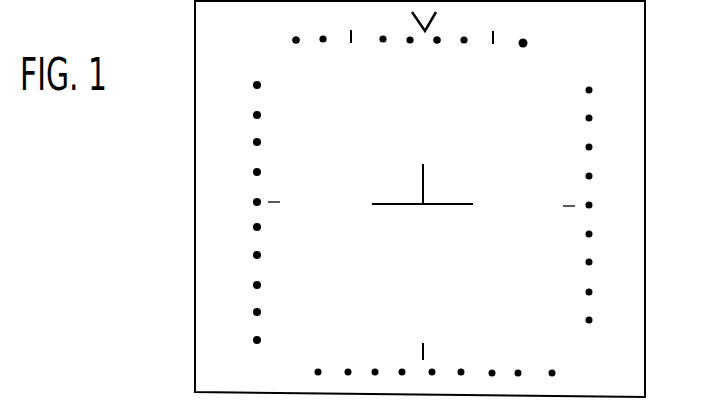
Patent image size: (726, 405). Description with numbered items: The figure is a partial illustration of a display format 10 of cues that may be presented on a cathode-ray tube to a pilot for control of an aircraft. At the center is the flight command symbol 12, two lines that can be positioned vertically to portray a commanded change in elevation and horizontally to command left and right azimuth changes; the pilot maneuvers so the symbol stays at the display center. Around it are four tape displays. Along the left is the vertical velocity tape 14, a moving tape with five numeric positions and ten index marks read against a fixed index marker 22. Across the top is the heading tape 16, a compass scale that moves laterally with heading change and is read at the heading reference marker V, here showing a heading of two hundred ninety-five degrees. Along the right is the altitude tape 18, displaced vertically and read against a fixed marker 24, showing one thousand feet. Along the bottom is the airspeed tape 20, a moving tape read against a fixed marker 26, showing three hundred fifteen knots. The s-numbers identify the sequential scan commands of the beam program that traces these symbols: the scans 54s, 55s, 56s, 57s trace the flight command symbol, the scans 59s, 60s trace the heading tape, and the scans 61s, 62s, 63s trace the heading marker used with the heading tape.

The display format 10 is at (645, 385).
The flight command symbol 12 is at (396, 177).
The vertical velocity tape 14 is at (242, 220).
The heading tape 16 is at (496, 23).
The altitude tape 18 is at (600, 189).
The airspeed tape 20 is at (517, 363).
The fixed index marker 22 is at (278, 205).
The fixed marker 24 is at (571, 209).
The fixed marker 26 is at (426, 350).
The scan command 54s is at (441, 193).
The scan command 55s is at (436, 161).
The scan command 56s is at (378, 201).
The scan command 57s is at (466, 204).
The scan command 59s is at (309, 26).
The scan command 60s is at (538, 33).
The scan command 61s is at (477, 24).
The scan command 62s is at (436, 28).
The scan command 63s is at (371, 22).